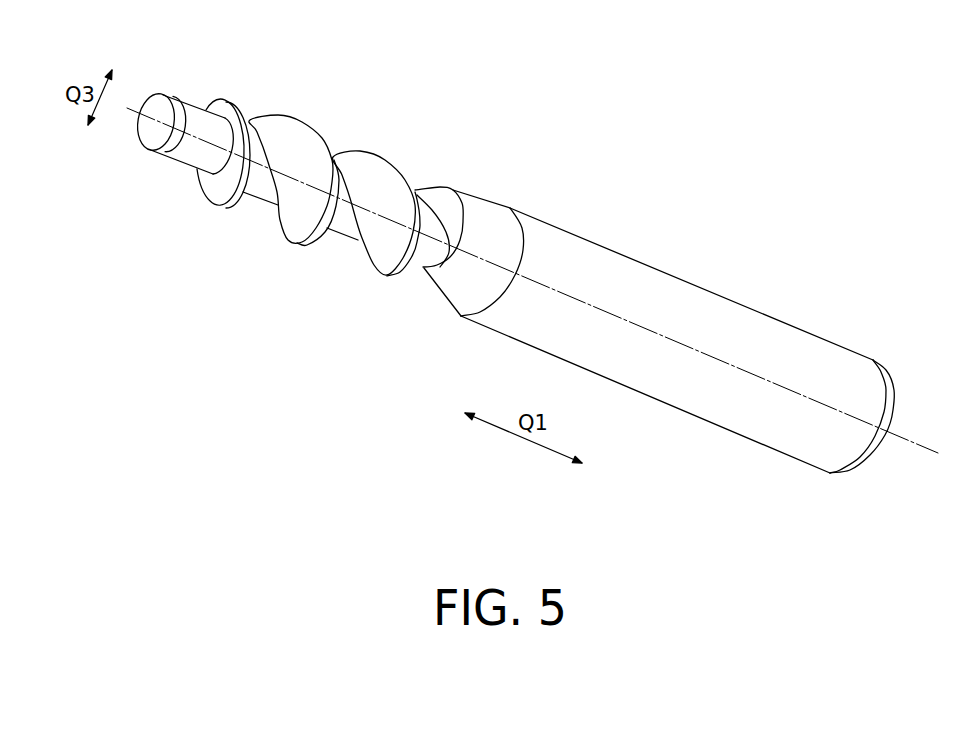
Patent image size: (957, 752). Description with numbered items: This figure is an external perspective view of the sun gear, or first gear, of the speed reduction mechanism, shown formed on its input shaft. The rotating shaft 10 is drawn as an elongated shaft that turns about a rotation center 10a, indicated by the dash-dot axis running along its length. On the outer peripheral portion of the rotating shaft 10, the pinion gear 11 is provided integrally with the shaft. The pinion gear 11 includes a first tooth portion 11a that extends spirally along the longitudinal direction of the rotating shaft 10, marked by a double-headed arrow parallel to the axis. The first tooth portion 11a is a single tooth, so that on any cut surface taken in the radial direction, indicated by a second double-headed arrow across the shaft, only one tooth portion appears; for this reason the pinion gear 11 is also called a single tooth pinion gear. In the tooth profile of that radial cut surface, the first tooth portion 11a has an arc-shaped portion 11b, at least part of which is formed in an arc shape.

The rotating shaft 10 is at (160, 110).
The rotation center 10a is at (927, 447).
The pinion gear 11 is at (353, 222).
The first tooth portion 11a is at (377, 278).
The arc-shaped portion 11b is at (232, 100).